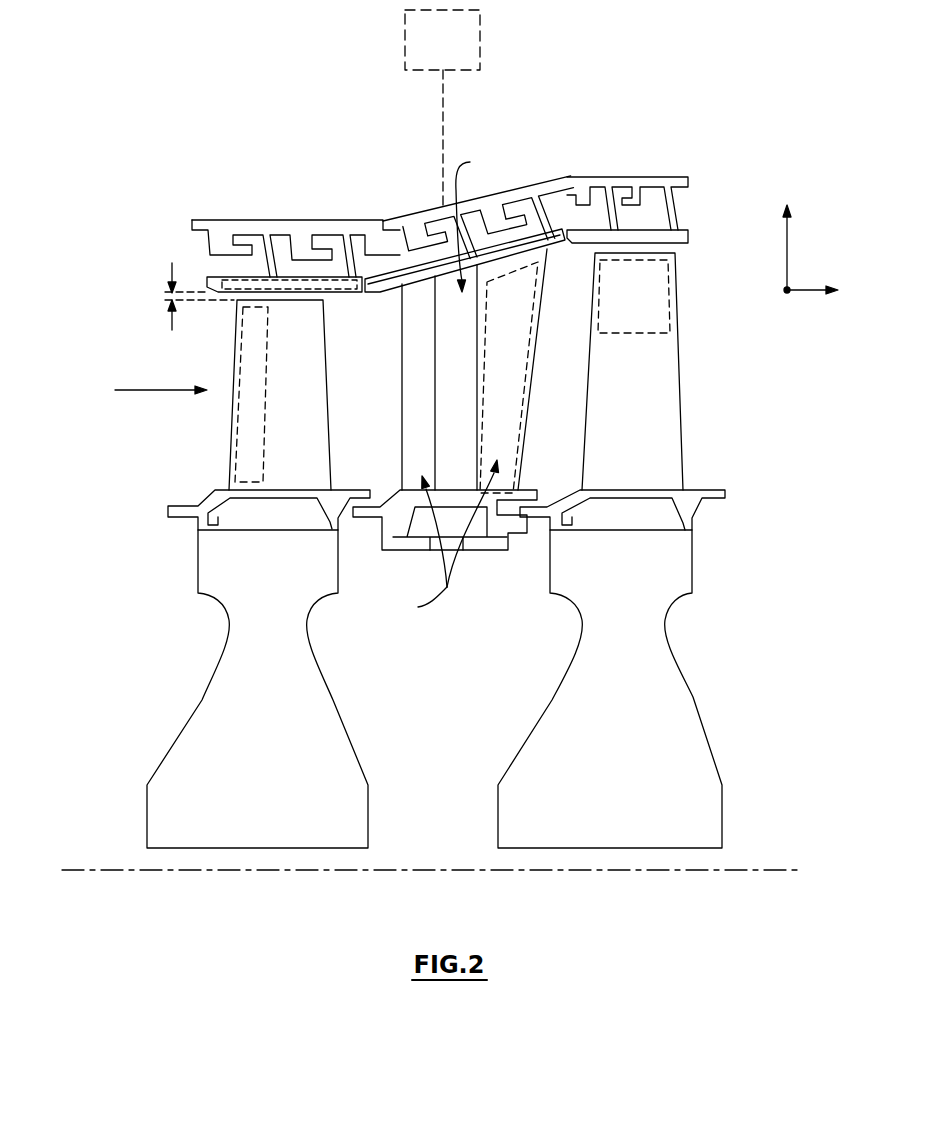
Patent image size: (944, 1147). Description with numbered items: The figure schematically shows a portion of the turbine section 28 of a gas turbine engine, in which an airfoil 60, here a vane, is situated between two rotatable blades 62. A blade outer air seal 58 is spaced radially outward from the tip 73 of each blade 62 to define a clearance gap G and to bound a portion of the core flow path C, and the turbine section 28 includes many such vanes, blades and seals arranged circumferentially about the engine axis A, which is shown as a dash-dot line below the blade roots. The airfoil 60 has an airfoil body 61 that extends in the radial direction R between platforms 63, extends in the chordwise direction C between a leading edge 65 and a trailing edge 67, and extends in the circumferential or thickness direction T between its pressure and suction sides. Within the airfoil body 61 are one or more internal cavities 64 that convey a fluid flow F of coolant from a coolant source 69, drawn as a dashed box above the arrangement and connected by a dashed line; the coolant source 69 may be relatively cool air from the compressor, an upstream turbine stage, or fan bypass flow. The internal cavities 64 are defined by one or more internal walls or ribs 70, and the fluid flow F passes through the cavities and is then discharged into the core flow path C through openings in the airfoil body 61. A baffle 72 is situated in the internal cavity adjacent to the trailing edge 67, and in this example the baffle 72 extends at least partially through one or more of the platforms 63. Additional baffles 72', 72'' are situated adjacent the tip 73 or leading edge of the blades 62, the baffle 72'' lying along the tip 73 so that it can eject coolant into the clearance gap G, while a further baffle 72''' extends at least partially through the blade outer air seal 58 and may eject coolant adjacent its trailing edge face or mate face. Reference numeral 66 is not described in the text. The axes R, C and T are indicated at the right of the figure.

The turbine section 28 is at (121, 152).
The blade outer air seal 58 is at (439, 252).
The airfoil 60 is at (456, 399).
The airfoil body 61 is at (403, 350).
The rotatable blade 62 is at (223, 424).
The platform 63 is at (547, 257).
The internal cavity 64 is at (417, 308).
The leading edge 65 is at (403, 451).
The airfoil rib 66 is at (410, 310).
The trailing edge 67 is at (524, 402).
The coolant source 69 is at (481, 40).
The internal rib 70 is at (472, 410).
The baffle 72 is at (532, 377).
The baffle 72' is at (220, 394).
The baffle 72'' is at (671, 296).
The baffle 72''' is at (245, 252).
The tip 73 is at (660, 250).
The engine axis A is at (797, 868).
The fluid flow F is at (449, 384).
The clearance gap G is at (171, 323).
The core flow path / chordwise direction C is at (150, 388).
The radial direction R is at (786, 235).
The circumferential or thickness direction T is at (787, 288).